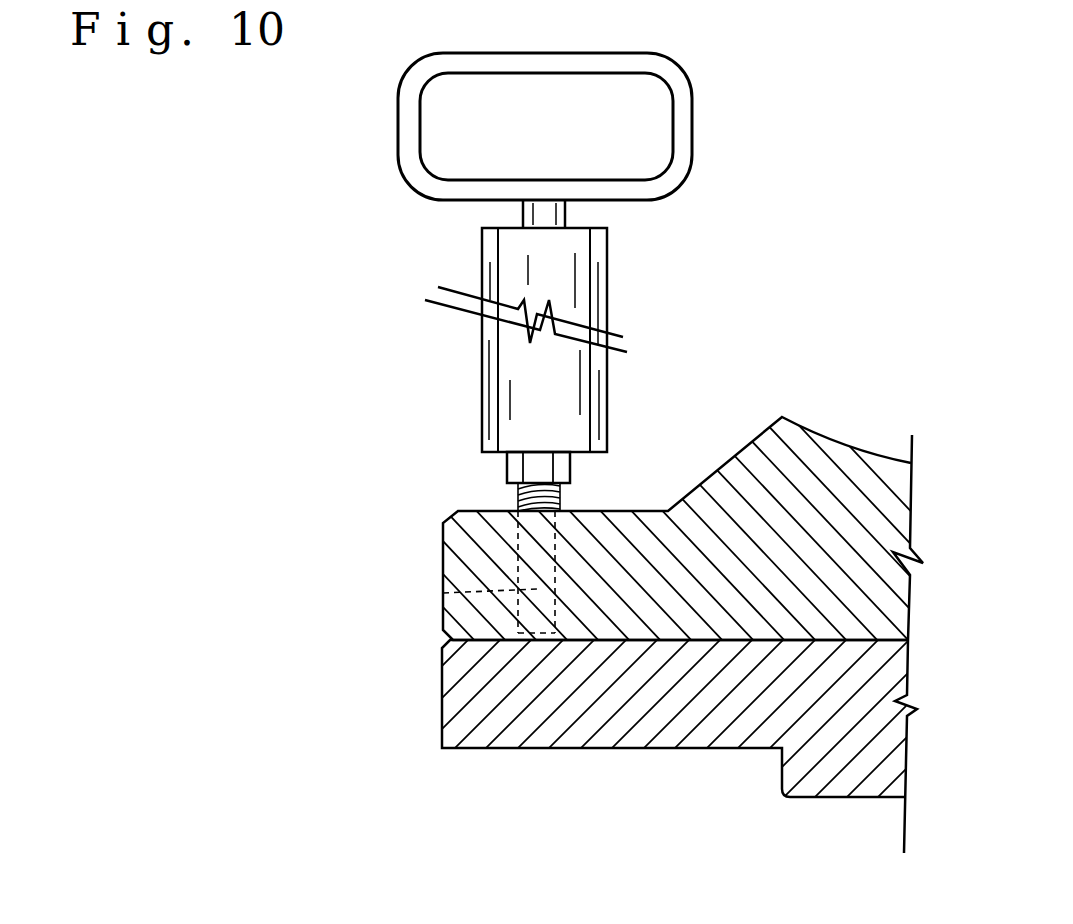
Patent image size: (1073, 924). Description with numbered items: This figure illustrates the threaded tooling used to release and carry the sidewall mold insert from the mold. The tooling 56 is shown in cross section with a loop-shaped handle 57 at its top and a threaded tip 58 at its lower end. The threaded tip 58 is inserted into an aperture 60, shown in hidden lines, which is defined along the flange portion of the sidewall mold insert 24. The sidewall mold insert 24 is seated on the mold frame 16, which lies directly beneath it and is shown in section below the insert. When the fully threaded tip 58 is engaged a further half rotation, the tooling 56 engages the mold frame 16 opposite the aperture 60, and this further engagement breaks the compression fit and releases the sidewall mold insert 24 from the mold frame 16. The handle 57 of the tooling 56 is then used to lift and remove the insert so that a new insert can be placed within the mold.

The handle 57 is at (682, 98).
The tooling 56 is at (603, 282).
The threaded tip 58 is at (482, 508).
The aperture 60 is at (440, 593).
The sidewall mold insert 24 is at (883, 508).
The mold frame 16 is at (530, 748).